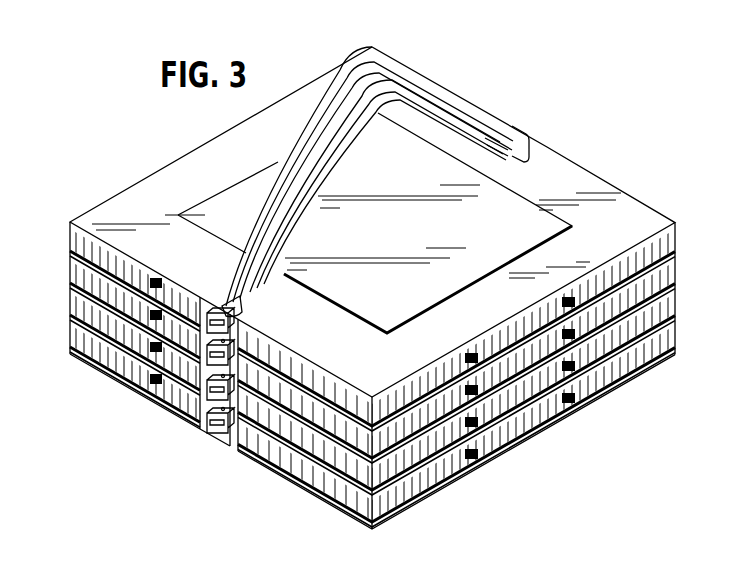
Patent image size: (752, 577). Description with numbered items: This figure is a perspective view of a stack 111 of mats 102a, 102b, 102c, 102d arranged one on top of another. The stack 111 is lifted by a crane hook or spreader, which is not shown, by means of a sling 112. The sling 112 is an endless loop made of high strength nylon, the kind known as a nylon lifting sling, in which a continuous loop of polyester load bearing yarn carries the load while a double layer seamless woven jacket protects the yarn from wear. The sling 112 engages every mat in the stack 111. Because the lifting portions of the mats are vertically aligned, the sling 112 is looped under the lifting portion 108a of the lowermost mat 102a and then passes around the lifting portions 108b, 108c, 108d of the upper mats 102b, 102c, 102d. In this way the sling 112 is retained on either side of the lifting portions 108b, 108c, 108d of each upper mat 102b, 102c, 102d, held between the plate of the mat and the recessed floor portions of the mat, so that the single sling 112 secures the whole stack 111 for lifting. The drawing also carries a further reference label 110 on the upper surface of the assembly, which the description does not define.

The lowermost mat 102a is at (674, 337).
The upper mat 102b is at (674, 304).
The upper mat 102c is at (674, 272).
The upper mat 102d is at (676, 238).
The lifting portion 108a is at (220, 448).
The lifting portion 108b is at (206, 406).
The lifting portion 108c is at (203, 370).
The lifting portion 108d is at (200, 333).
The cover plate 110 is at (178, 150).
The stack 111 is at (376, 362).
The sling 112 is at (466, 121).